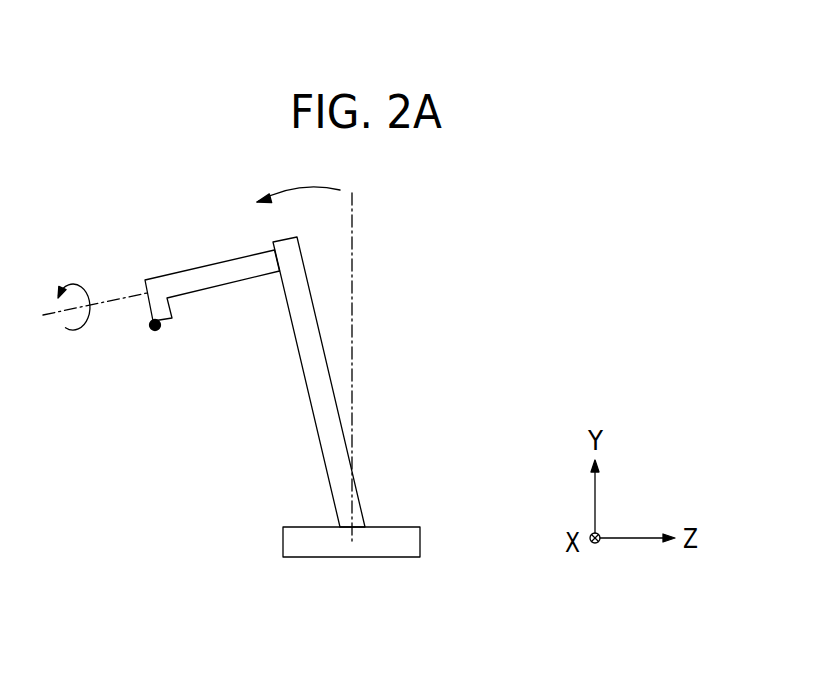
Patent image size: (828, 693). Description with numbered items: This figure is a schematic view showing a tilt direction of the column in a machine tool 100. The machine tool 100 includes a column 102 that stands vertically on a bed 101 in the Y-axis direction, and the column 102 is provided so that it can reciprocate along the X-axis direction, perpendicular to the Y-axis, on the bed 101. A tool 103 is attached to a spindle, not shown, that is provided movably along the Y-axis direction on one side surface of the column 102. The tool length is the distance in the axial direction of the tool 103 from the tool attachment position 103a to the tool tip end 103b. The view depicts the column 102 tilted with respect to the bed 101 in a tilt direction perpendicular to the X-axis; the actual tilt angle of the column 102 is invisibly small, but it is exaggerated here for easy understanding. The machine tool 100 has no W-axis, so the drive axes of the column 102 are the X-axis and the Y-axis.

The machine tool 100 is at (433, 248).
The bed 101 is at (392, 525).
The column 102 is at (317, 358).
The tool 103 is at (203, 266).
The tool attachment position 103a is at (280, 271).
The tool tip end 103b is at (153, 332).